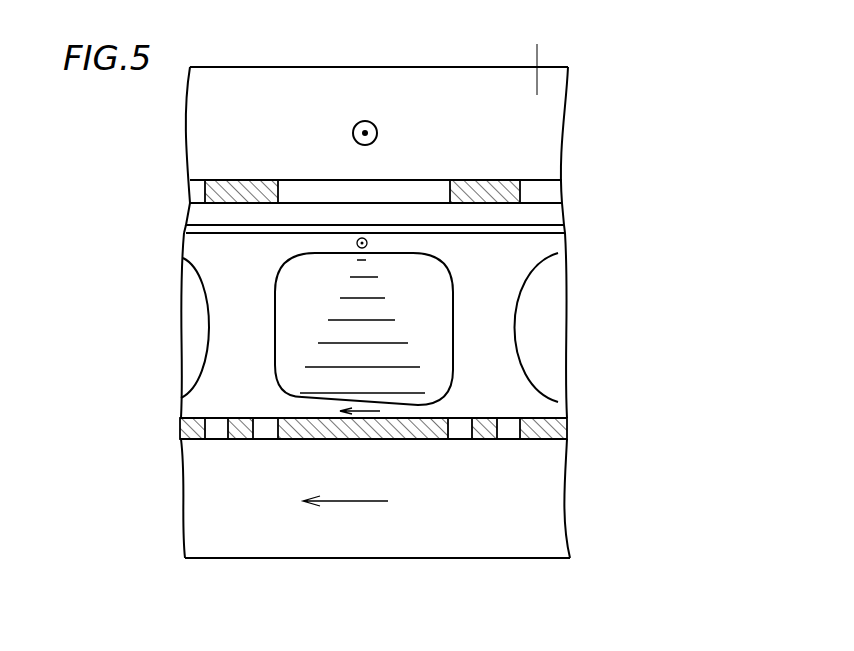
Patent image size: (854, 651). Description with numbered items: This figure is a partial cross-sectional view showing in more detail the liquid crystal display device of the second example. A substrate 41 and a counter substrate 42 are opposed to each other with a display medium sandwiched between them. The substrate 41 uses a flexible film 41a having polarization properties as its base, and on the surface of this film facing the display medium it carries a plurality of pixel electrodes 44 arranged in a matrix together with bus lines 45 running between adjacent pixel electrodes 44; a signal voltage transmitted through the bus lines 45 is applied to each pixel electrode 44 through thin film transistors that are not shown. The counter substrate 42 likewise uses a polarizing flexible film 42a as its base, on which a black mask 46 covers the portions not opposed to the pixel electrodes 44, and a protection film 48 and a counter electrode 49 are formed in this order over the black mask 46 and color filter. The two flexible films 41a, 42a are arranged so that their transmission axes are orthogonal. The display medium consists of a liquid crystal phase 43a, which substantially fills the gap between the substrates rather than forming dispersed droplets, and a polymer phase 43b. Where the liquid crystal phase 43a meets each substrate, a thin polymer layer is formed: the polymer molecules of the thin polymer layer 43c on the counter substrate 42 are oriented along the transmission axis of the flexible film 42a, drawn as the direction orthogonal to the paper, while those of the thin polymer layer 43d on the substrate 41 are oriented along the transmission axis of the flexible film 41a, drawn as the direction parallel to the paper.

The substrate 41 is at (648, 417).
The flexible film 41a is at (558, 518).
The counter substrate 42 is at (650, 70).
The flexible film 42a is at (553, 54).
The liquid crystal phase 43a is at (290, 372).
The polymer phase 43b is at (233, 327).
The thin polymer phase (polymer layer) 43c is at (336, 240).
The thin polymer phase (polymer layer) 43d is at (435, 408).
The pixel electrodes 44 is at (567, 427).
The bus lines 45 is at (483, 440).
The black mask 46 is at (467, 180).
The protection film 48 is at (558, 215).
The counter electrode 49 is at (565, 232).